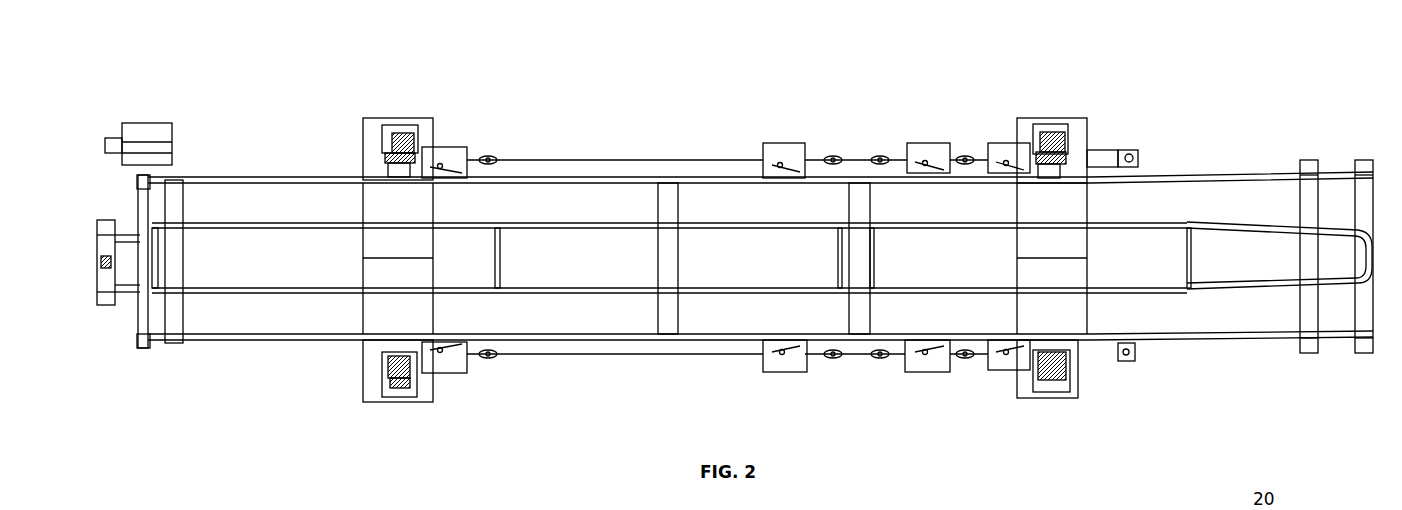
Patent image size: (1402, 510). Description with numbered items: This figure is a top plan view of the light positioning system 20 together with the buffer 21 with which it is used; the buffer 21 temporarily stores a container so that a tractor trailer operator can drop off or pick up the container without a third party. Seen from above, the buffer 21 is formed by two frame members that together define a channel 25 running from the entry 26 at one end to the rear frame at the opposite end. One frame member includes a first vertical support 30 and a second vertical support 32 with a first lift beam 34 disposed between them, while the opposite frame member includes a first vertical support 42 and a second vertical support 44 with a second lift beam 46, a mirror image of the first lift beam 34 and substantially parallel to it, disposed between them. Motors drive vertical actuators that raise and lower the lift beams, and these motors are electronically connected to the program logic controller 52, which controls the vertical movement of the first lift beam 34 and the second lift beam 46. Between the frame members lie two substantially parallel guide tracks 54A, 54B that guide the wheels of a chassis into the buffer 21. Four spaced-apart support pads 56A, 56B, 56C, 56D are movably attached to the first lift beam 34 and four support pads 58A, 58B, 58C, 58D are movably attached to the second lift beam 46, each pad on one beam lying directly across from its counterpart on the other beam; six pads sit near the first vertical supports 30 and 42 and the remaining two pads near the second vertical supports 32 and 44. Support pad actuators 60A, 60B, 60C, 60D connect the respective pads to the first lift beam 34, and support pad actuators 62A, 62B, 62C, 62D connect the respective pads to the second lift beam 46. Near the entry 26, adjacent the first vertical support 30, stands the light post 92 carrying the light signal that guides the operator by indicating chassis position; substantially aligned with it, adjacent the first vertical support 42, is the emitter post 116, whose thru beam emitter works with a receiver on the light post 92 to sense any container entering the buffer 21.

The light positioning system 20 is at (1200, 80).
The buffer 21 is at (642, 120).
The channel 25 is at (1245, 253).
The entry 26 is at (1386, 238).
The first vertical support 30 is at (1048, 132).
The second vertical support 32 is at (395, 132).
The first lift beam 34 is at (243, 186).
The first vertical support 42 is at (1064, 399).
The second vertical support 44 is at (397, 388).
The second lift beam 46 is at (228, 332).
The program logic controller 52 is at (140, 130).
The guide track 54A is at (585, 190).
The guide track 54B is at (613, 322).
The support pad 56A is at (1003, 150).
The support pad 56B is at (932, 150).
The support pad 56C is at (792, 150).
The support pad 56D is at (446, 146).
The support pad 58A is at (998, 366).
The support pad 58B is at (912, 366).
The support pad 58C is at (776, 373).
The support pad 58D is at (447, 374).
The support pad actuator 60A is at (978, 138).
The support pad actuator 60B is at (898, 135).
The support pad actuator 60C is at (824, 135).
The support pad actuator 60D is at (488, 140).
The support pad actuator 62A is at (972, 382).
The support pad actuator 62B is at (878, 380).
The support pad actuator 62C is at (823, 378).
The support pad actuator 62D is at (492, 382).
The light post 92 is at (1131, 154).
The emitter post 116 is at (1135, 362).